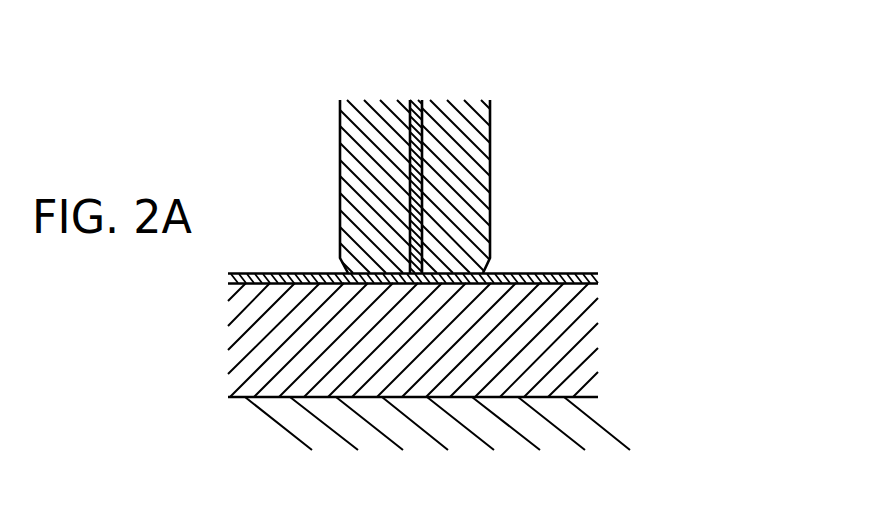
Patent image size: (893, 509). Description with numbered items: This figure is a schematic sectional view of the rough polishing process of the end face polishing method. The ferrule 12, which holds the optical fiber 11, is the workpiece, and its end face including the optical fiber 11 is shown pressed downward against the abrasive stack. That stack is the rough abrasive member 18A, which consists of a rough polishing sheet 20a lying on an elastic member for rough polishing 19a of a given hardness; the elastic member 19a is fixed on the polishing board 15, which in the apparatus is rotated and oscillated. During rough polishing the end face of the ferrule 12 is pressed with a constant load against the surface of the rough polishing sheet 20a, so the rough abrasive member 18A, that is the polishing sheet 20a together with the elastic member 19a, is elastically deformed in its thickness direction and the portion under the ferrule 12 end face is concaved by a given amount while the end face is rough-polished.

The optical fiber 11 is at (422, 112).
The ferrule 12 is at (473, 157).
The polishing board 15 is at (587, 426).
The rough abrasive member 18A is at (519, 333).
The elastic member for rough polishing 19a is at (587, 328).
The rough polishing sheet 20a is at (598, 278).